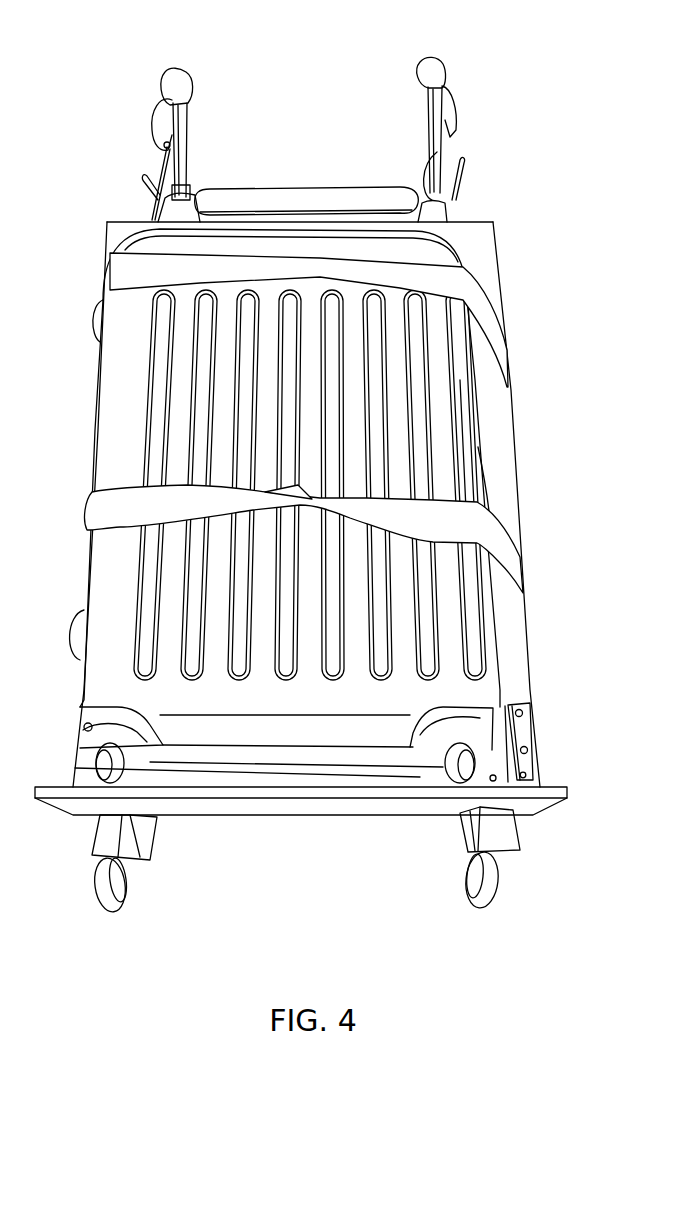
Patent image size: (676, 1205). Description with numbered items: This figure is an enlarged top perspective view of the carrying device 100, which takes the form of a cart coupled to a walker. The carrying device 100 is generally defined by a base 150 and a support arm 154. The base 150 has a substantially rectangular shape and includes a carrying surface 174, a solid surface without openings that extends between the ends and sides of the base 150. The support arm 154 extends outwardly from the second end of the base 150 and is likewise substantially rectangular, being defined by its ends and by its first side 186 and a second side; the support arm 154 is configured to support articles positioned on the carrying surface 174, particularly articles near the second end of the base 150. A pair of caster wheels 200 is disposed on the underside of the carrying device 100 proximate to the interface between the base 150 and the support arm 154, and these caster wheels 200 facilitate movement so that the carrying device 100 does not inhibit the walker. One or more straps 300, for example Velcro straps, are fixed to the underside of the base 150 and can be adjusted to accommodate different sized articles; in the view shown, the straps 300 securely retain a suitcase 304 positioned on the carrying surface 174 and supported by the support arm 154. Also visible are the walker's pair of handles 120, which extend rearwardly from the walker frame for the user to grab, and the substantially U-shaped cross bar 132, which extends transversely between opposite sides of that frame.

The carrying device 100 is at (532, 479).
The handles 120 is at (178, 80).
The cross bar 132 is at (300, 196).
The base 150 is at (532, 690).
The support arm 154 is at (550, 848).
The carrying surface 174 is at (490, 275).
The first side 186 is at (298, 792).
The caster wheels 200 is at (118, 925).
The straps 300 is at (506, 366).
The suitcase 304 is at (217, 563).